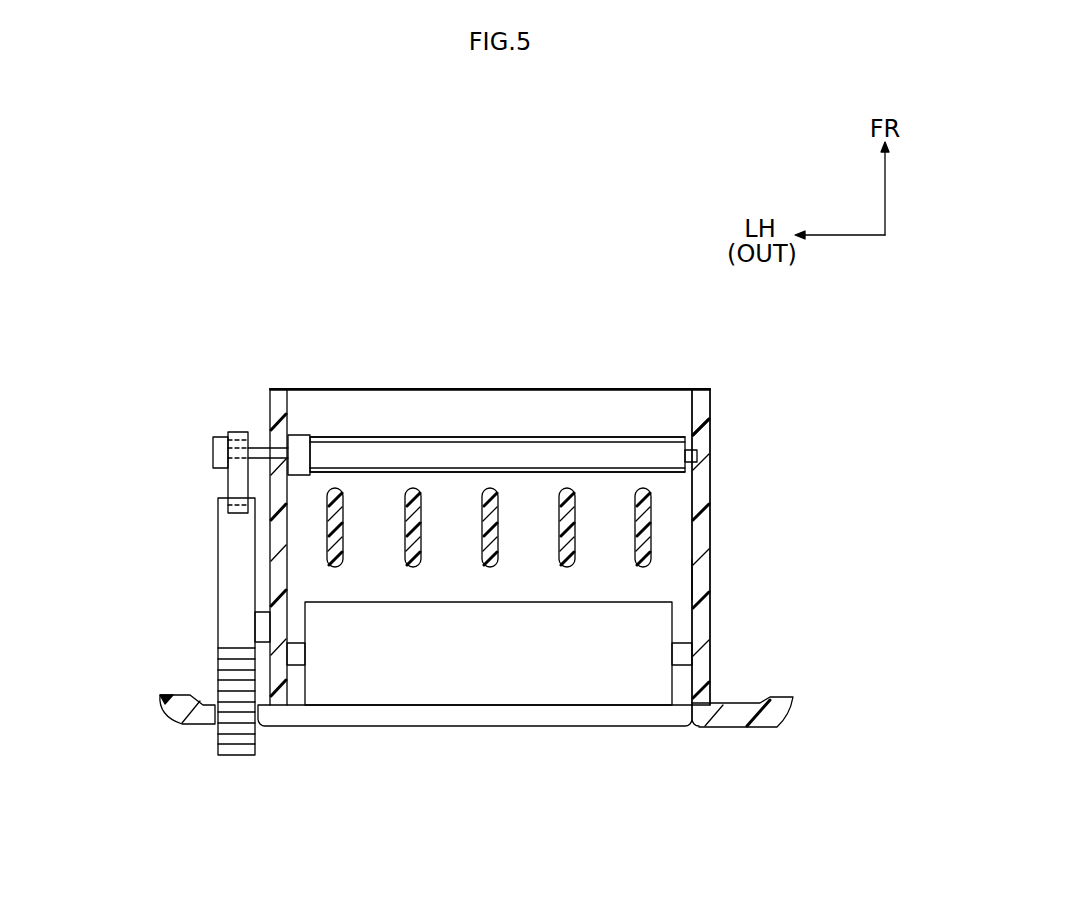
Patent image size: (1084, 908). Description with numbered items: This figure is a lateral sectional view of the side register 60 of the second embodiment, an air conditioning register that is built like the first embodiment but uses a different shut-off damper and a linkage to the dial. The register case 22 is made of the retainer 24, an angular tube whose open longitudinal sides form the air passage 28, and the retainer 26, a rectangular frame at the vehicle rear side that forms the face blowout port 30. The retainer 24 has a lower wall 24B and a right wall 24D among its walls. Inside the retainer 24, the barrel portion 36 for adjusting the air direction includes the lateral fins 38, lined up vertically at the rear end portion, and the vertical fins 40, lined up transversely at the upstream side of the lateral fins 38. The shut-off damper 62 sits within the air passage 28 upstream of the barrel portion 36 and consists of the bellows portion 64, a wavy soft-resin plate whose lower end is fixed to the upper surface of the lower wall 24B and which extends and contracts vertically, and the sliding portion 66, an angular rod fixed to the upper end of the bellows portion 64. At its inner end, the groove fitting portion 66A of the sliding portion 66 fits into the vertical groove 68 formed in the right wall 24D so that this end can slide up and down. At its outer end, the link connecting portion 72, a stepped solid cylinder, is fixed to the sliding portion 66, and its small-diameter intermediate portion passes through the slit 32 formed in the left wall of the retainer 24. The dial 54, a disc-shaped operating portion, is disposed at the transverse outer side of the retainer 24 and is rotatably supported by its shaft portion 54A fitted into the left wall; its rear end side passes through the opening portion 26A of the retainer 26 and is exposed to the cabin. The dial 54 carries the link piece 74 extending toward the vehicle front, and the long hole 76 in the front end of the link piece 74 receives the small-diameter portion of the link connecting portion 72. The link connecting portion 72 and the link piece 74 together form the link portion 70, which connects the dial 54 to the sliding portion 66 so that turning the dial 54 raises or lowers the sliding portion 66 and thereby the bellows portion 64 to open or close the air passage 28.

The register case 22 is at (320, 376).
The retainer 24 is at (714, 619).
The lower wall 24B is at (654, 408).
The right wall 24D is at (710, 530).
The retainer 26 is at (742, 720).
The opening portion 26A is at (228, 726).
The air passage 28 is at (508, 579).
The face blowout port 30 is at (690, 712).
The slit 32 is at (264, 447).
The barrel portion 36 is at (670, 576).
The lateral fins 38 is at (388, 686).
The vertical fins 40 is at (408, 510).
The dial 54 is at (218, 592).
The shaft portion 54A is at (262, 625).
The side register 60 is at (501, 742).
The shut-off damper 62 is at (474, 434).
The bellows portion 64 is at (405, 437).
The sliding portion 66 is at (548, 437).
The groove fitting portion 66A is at (708, 427).
The vertical groove 68 is at (700, 460).
The link portion 70 is at (193, 438).
The link connecting portion 72 is at (213, 450).
The link piece 74 is at (228, 487).
The long hole 76 is at (220, 455).